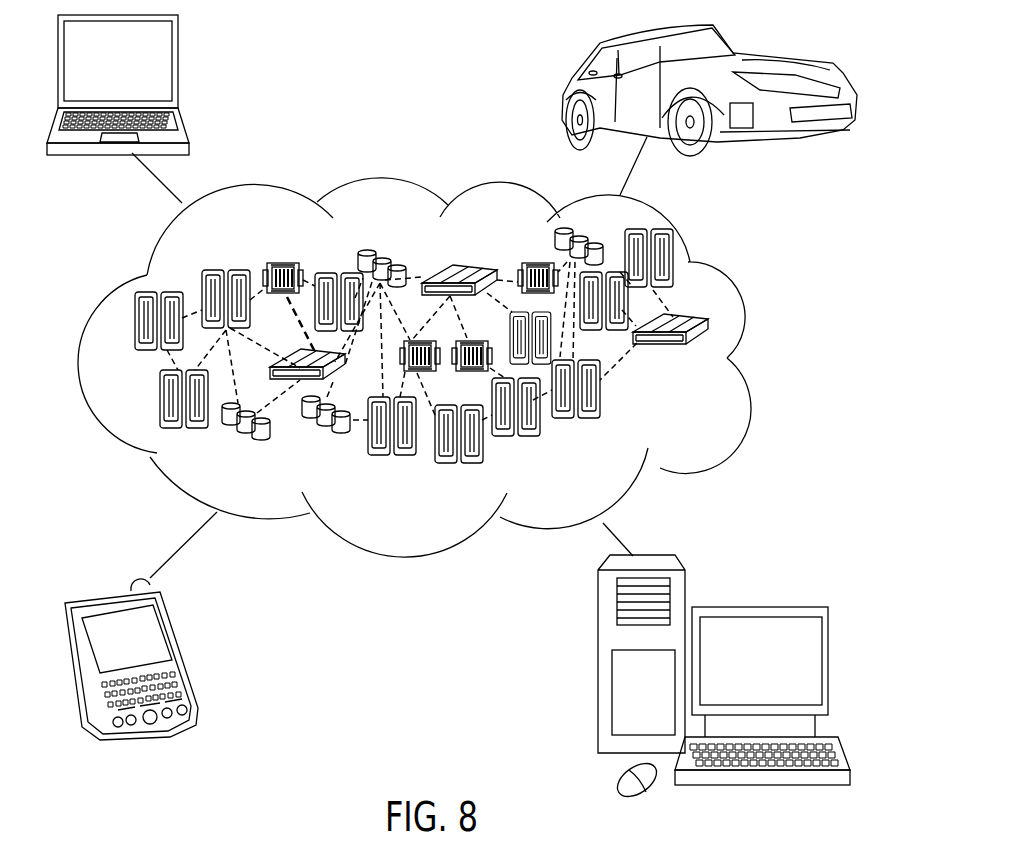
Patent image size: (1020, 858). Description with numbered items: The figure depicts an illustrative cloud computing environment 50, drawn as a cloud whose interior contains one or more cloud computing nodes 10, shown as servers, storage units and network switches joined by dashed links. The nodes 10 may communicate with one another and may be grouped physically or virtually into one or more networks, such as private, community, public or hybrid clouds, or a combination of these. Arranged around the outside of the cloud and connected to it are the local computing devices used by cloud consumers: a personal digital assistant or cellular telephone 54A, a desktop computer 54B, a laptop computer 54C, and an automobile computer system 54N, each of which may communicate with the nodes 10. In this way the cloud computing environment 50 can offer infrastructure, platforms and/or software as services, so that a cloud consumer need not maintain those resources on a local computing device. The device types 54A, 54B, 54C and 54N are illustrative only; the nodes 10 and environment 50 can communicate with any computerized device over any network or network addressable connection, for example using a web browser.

The cloud computing node 10 is at (703, 410).
The cloud computing environment 50 is at (742, 296).
The personal digital assistant or cellular telephone 54A is at (183, 660).
The desktop computer 54B is at (757, 606).
The laptop computer 54C is at (178, 67).
The automobile computer system 54N is at (565, 82).